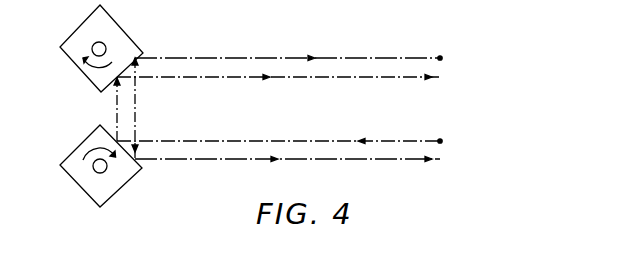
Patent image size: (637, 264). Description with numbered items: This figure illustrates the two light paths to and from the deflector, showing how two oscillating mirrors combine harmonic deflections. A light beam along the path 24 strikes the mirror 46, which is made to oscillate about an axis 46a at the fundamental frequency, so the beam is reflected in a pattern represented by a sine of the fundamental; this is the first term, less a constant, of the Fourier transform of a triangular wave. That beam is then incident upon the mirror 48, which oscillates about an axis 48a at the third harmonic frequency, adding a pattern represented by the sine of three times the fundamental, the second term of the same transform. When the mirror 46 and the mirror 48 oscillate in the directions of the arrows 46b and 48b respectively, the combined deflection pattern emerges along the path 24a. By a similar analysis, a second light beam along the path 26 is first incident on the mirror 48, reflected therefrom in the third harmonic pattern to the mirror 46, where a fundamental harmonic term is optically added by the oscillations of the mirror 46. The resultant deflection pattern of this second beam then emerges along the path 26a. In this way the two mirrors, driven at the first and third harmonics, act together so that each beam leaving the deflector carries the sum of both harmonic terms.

The path 24 is at (237, 142).
The path 24a is at (348, 80).
The path 26 is at (236, 58).
The path 26a is at (348, 161).
The mirror 46 is at (117, 192).
The axis 46a is at (98, 175).
The arrow 46b is at (93, 143).
The mirror 48 is at (115, 25).
The axis 48a is at (95, 42).
The arrow 48b is at (90, 76).